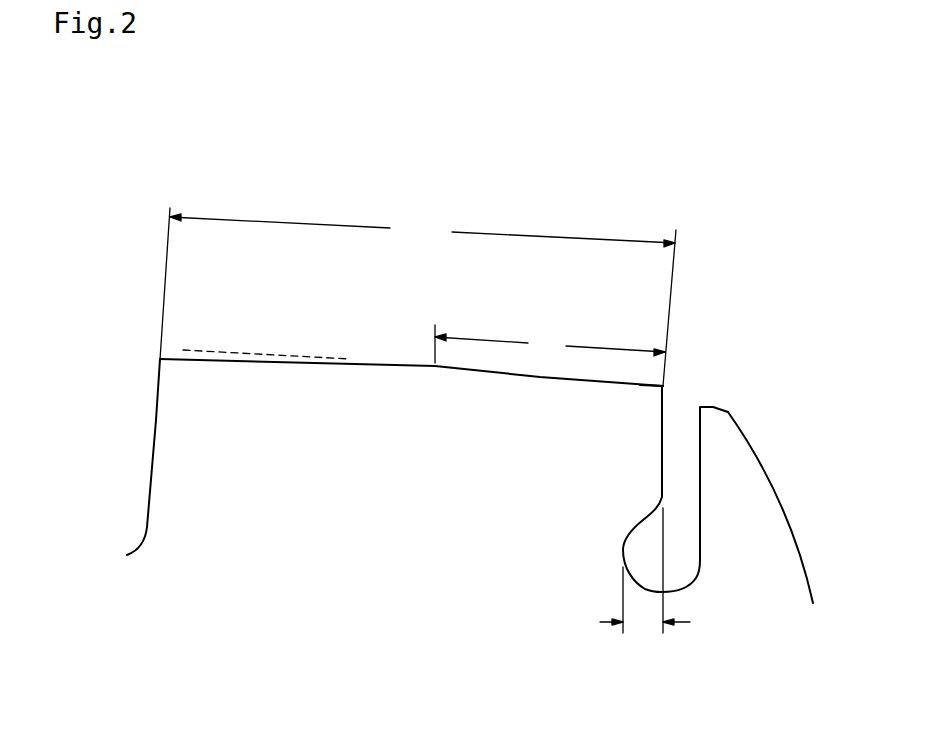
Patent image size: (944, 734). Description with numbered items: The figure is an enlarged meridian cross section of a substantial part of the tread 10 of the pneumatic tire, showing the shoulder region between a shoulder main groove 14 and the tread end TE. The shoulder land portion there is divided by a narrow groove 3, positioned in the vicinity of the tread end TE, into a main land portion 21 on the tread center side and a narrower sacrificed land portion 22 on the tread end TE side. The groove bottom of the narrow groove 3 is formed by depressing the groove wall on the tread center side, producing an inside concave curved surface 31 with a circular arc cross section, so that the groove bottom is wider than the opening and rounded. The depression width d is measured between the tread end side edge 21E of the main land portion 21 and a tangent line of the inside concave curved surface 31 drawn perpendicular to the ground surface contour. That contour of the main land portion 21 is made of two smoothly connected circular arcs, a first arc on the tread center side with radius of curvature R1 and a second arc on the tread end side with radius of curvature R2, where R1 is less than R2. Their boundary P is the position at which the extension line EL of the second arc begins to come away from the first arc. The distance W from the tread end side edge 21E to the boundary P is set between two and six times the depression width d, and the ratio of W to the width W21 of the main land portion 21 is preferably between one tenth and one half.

The tread 10 is at (156, 390).
The shoulder main groove 14 is at (148, 490).
The main land portion 21 is at (345, 360).
The extension line EL is at (210, 353).
The boundary P is at (430, 362).
The width of the main land portion W21 is at (418, 297).
The distance W is at (550, 343).
The tread end side edge 21E is at (662, 387).
The sacrificed land portion 22 is at (713, 407).
The tread end TE is at (728, 412).
The narrow groove 3 is at (695, 482).
The inside concave curved surface 31 is at (643, 518).
The radius of curvature of the first circular arc R1 is at (303, 366).
The radius of curvature of the second circular arc R2 is at (538, 380).
The depression width d is at (645, 580).